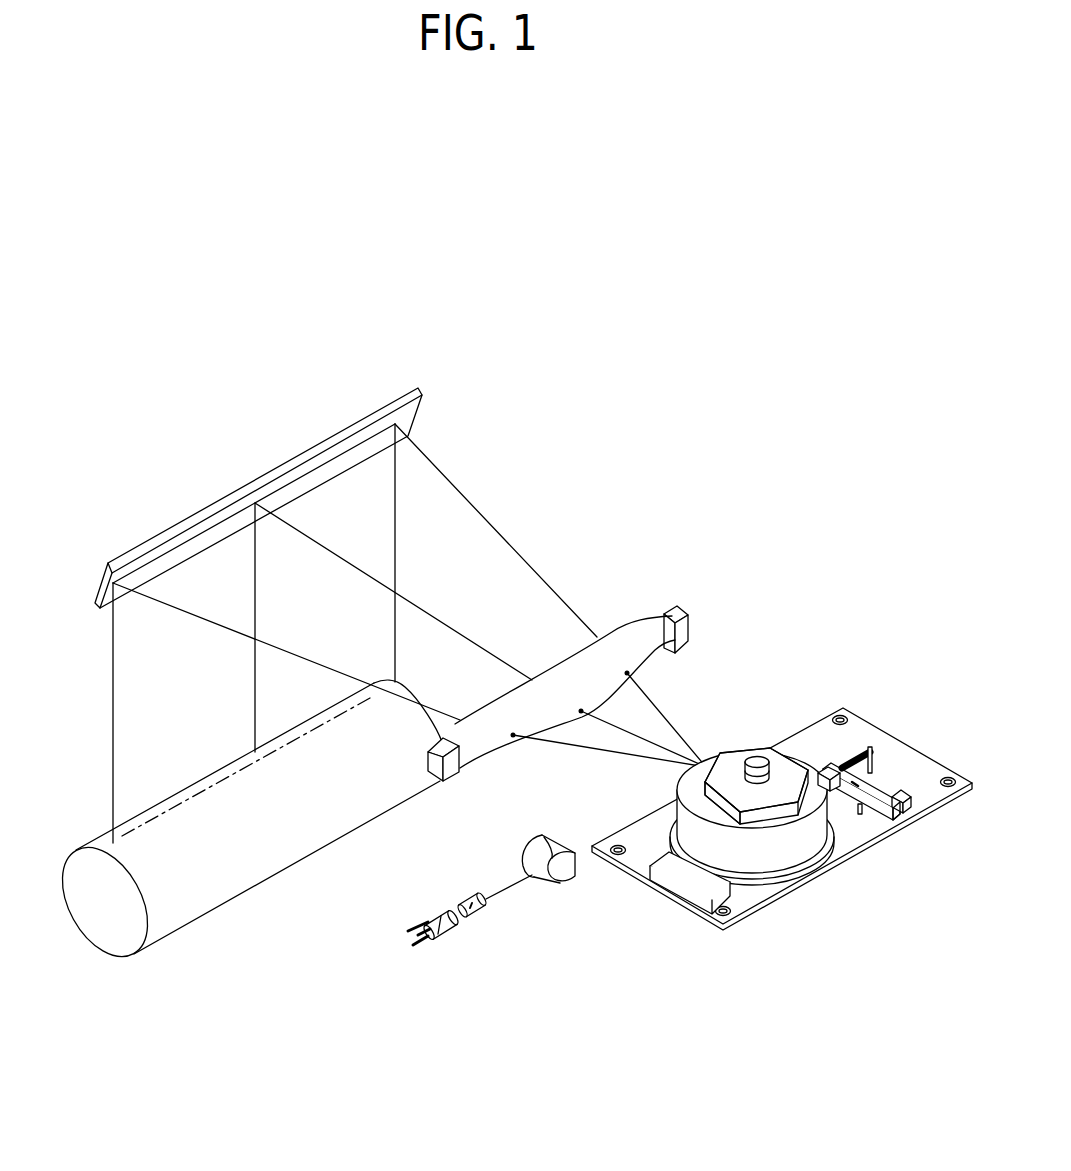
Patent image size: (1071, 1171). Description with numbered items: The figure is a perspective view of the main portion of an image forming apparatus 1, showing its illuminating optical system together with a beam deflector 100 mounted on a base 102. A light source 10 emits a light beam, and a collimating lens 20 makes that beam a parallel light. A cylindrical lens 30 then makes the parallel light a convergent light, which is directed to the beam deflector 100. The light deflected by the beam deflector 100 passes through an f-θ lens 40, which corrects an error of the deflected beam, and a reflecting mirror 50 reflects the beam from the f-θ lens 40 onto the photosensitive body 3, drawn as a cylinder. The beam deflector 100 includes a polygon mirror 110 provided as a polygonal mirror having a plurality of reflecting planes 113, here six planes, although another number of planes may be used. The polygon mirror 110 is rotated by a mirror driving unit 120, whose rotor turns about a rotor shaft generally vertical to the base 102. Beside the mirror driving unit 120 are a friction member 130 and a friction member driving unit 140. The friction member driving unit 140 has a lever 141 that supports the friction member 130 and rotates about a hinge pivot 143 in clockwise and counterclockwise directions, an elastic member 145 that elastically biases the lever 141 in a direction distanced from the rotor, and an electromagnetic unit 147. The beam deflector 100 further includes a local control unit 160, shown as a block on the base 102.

The image forming apparatus 1 is at (776, 463).
The photosensitive body 3 is at (220, 894).
The light source 10 is at (427, 947).
The collimating lens 20 is at (478, 920).
The cylindrical lens 30 is at (543, 880).
The f-θ lens 40 is at (647, 622).
The reflecting mirror 50 is at (288, 462).
The beam deflector 100 is at (782, 796).
The base 102 is at (770, 890).
The polygon mirror 110 is at (757, 748).
The reflecting planes 113 is at (700, 776).
The mirror driving unit 120 is at (748, 848).
The friction member 130 is at (836, 808).
The friction member driving unit 140 is at (895, 777).
The lever 141 is at (899, 815).
The hinge pivot 143 is at (861, 814).
The elastic member 145 is at (853, 758).
The electromagnetic unit 147 is at (908, 788).
The local control unit 160 is at (703, 884).